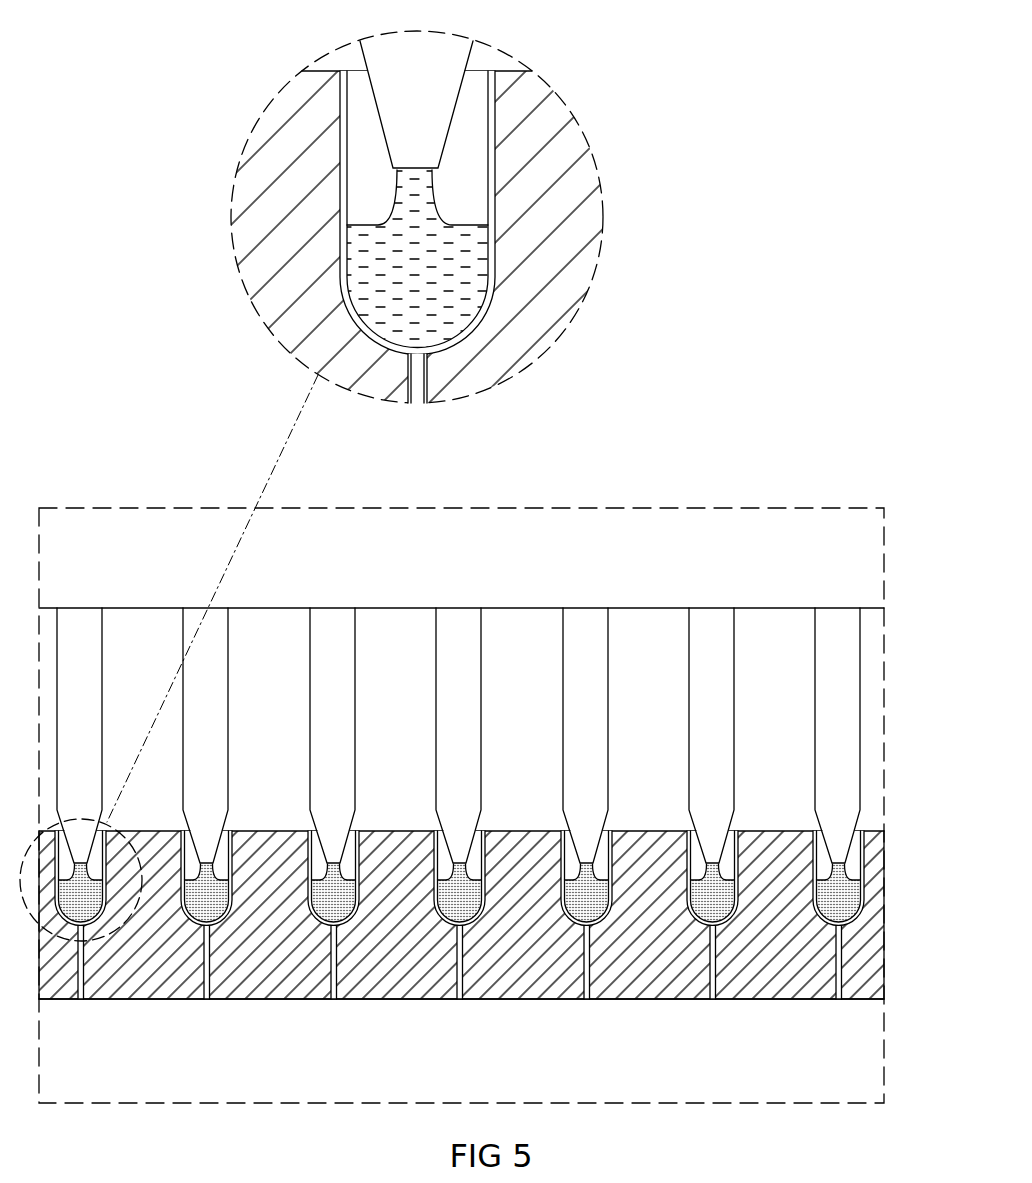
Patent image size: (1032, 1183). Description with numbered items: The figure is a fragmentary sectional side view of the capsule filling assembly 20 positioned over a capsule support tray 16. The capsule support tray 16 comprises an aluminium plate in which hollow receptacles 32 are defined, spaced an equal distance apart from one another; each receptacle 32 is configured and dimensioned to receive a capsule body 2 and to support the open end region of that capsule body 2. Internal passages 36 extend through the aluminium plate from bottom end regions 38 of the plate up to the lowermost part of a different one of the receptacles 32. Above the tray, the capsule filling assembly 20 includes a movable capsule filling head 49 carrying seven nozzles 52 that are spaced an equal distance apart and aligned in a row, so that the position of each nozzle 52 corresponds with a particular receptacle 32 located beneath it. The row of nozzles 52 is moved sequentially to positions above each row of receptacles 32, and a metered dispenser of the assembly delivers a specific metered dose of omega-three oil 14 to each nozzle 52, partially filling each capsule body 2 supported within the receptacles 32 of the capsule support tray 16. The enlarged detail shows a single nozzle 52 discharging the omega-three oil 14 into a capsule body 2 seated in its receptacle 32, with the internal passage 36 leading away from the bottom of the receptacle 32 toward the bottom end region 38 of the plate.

The capsule body 2 is at (497, 163).
The Omega-3 oil 14 is at (463, 284).
The capsule support tray 16 is at (872, 941).
The capsule filling assembly 20 is at (543, 540).
The receptacle 32 is at (862, 919).
The internal passage 36 is at (427, 381).
The bottom end region 38 is at (143, 1005).
The capsule filling head 49 is at (740, 532).
The nozzle 52 is at (449, 56).